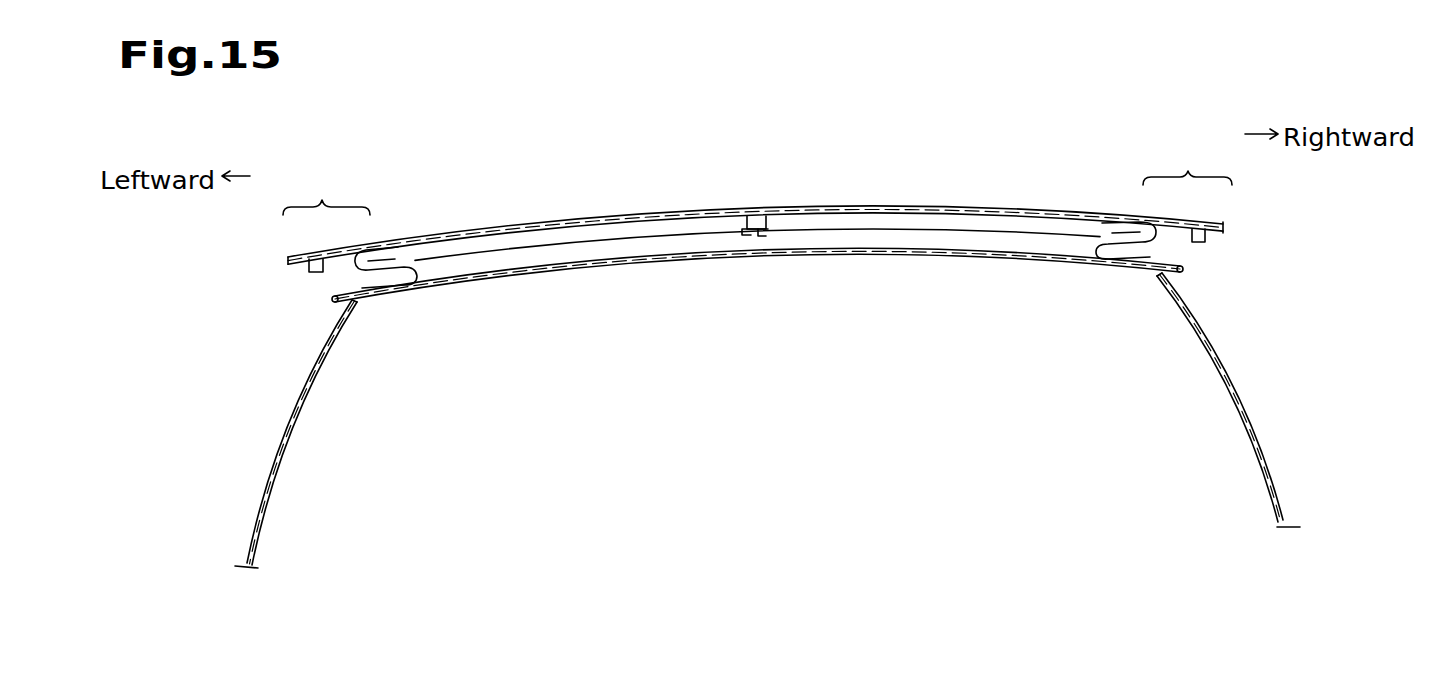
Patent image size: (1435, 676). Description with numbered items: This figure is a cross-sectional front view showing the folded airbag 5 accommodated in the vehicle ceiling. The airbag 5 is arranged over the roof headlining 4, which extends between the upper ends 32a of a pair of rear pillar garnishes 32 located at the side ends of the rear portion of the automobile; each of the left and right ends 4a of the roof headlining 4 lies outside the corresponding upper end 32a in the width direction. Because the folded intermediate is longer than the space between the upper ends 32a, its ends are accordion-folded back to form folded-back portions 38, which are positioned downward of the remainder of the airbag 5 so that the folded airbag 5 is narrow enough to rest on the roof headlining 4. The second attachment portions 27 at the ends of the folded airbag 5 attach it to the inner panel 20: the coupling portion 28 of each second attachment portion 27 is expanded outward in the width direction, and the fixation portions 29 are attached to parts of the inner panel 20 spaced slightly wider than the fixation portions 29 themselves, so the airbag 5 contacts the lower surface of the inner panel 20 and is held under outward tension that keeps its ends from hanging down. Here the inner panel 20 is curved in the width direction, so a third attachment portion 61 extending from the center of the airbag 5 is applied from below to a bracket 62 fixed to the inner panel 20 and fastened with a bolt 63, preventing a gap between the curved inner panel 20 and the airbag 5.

The roof headlining 4 is at (829, 252).
The left and right ends of the roof headlining 4a is at (338, 298).
The airbag 5 is at (697, 222).
The inner panel 20 is at (850, 211).
The second attachment portion 27 is at (757, 179).
The coupling portion 28 is at (356, 255).
The fixation portion 29 is at (314, 261).
The rear pillar garnish 32 is at (297, 414).
The upper end of the rear pillar garnish 32a is at (352, 304).
The folded-back portion 38 is at (384, 266).
The third attachment portion 61 is at (744, 234).
The bracket 62 is at (755, 214).
The bolt 63 is at (760, 231).